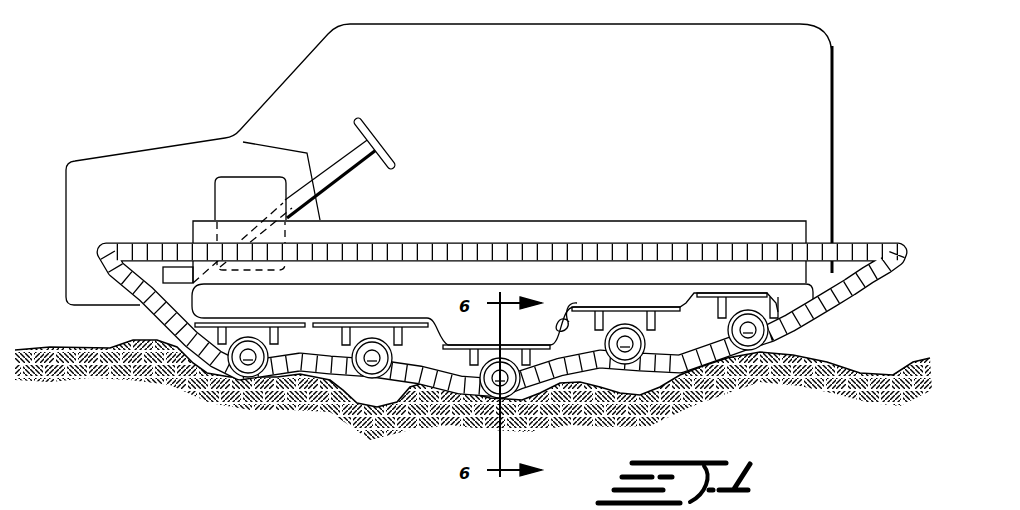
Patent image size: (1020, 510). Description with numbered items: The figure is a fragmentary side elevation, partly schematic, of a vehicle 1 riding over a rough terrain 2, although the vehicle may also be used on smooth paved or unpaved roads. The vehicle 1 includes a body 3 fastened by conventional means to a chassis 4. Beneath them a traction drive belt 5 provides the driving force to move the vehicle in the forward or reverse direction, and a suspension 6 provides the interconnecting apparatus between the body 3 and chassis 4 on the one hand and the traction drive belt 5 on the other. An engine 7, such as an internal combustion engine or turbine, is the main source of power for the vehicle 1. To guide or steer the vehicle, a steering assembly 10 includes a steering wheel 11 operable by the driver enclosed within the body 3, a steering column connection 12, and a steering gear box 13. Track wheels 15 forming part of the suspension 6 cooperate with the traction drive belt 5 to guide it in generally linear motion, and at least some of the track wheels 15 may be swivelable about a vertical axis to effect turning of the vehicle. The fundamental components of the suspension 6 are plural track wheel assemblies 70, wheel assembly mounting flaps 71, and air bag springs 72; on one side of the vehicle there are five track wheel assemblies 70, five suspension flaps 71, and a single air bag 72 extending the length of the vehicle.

The vehicle 1 is at (178, 138).
The rough terrain 2 is at (64, 348).
The body 3 is at (66, 200).
The chassis 4 is at (436, 255).
The traction drive belt 5 is at (468, 252).
The suspension 6 is at (533, 280).
The engine 7 is at (215, 192).
The steering assembly 10 is at (351, 137).
The steering wheel 11 is at (388, 143).
The steering column connection 12 is at (342, 176).
The steering gear box 13 is at (180, 270).
The track wheels 15 is at (245, 372).
The track wheel assemblies 70 is at (458, 362).
The wheel assembly mounting flaps 71 is at (567, 415).
The air bag springs 72 is at (575, 311).